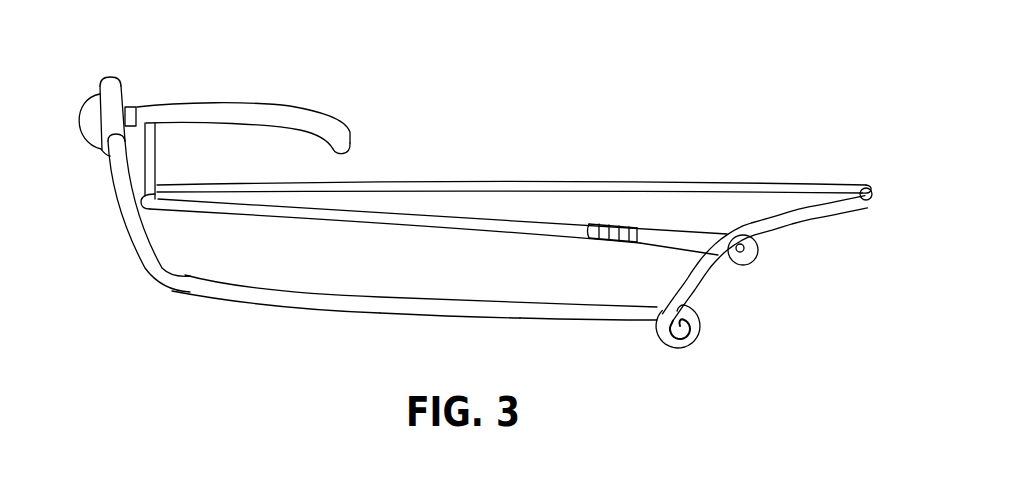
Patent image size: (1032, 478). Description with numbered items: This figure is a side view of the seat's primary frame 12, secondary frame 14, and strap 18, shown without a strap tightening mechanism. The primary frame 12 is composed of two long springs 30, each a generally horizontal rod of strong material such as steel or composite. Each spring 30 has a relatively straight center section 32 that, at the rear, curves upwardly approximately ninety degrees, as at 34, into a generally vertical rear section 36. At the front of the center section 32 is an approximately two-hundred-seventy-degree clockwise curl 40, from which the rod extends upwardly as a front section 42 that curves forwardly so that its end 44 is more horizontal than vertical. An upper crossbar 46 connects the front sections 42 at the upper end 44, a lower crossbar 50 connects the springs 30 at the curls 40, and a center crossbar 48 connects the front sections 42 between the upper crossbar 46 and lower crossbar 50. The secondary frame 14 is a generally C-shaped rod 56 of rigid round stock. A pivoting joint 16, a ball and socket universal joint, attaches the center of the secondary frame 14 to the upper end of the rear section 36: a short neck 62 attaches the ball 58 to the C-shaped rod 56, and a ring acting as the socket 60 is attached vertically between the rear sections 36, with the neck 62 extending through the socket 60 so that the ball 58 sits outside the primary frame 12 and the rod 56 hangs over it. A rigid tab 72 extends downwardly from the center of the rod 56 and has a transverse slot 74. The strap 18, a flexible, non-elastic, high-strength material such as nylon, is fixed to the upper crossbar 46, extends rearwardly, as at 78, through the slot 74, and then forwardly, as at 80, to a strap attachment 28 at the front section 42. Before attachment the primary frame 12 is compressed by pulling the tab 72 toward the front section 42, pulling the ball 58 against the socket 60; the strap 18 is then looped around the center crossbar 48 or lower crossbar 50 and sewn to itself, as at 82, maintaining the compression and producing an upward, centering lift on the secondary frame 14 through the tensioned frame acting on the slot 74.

The primary frame 12 is at (253, 306).
The secondary frame 14 is at (293, 106).
The pivoting joint 16 is at (91, 84).
The strap 18 is at (541, 176).
The strap attachment 28 is at (666, 254).
The spring 30 is at (330, 315).
The center section 32 is at (437, 316).
The rear curve 34 is at (156, 286).
The rear section 36 is at (120, 219).
The curl 40 is at (694, 349).
The front section 42 is at (814, 216).
The end of front section 44 is at (858, 184).
The upper crossbar 46 is at (873, 196).
The center crossbar 48 is at (756, 256).
The lower crossbar 50 is at (690, 329).
The C-shaped rod 56 is at (340, 125).
The ball 58 is at (80, 136).
The socket 60 is at (123, 86).
The neck 62 is at (129, 106).
The tab 72 is at (160, 146).
The slot 74 is at (160, 196).
The rearward strap portion 78 is at (618, 180).
The forward strap portion 80 is at (526, 234).
The sewn strap loop 82 is at (611, 240).